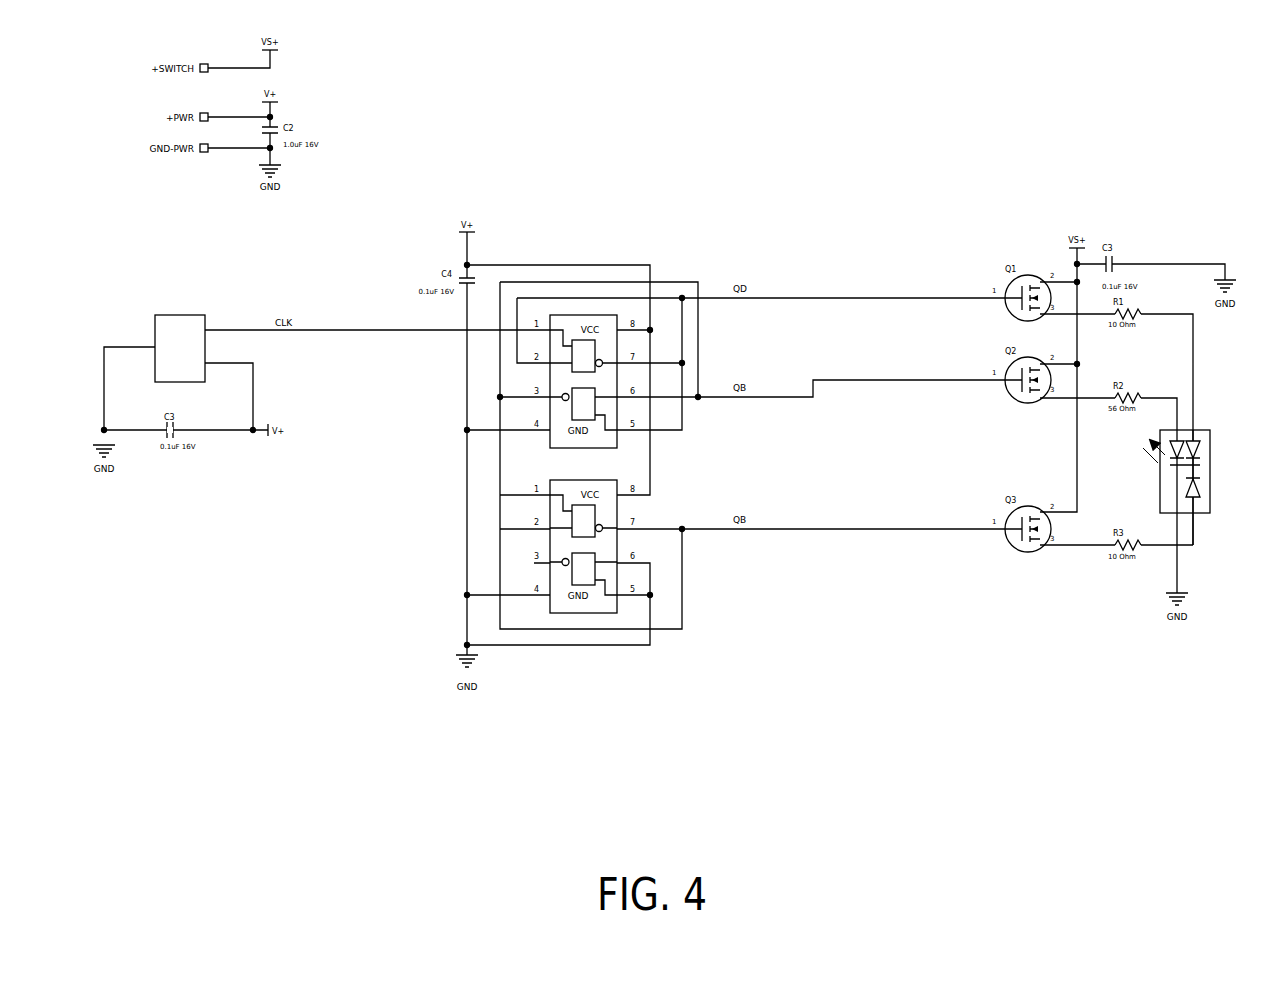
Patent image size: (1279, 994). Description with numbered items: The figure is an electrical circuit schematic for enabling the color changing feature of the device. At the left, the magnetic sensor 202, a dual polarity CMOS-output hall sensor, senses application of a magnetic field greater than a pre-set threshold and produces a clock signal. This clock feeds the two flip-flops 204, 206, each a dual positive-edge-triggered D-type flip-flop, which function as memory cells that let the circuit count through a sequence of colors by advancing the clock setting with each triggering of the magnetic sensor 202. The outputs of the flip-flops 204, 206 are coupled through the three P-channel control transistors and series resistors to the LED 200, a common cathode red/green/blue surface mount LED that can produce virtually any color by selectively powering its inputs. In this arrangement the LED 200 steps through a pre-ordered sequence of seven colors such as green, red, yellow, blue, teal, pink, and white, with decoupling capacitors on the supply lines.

The LED 200 is at (1203, 487).
The magnetic sensor 202 is at (203, 318).
The flip-flop 204 is at (605, 317).
The flip-flop 206 is at (598, 608).